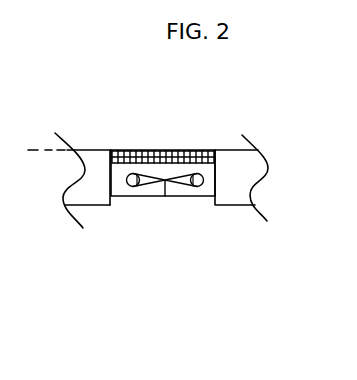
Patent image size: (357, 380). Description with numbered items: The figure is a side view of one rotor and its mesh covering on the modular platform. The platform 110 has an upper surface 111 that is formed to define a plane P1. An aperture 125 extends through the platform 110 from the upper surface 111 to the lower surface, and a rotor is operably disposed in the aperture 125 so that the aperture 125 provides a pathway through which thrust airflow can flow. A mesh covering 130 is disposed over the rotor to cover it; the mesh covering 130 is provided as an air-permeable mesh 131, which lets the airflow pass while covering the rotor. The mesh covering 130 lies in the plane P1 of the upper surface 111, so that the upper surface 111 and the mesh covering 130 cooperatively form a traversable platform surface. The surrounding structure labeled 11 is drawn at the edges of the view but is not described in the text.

The platform 110 is at (85, 150).
The upper surface 111 is at (91, 206).
The mesh covering 130 is at (157, 150).
The air-permeable mesh 131 is at (180, 156).
The wall panel 11 is at (242, 172).
The aperture 125 is at (180, 217).
The plane P1 is at (38, 150).